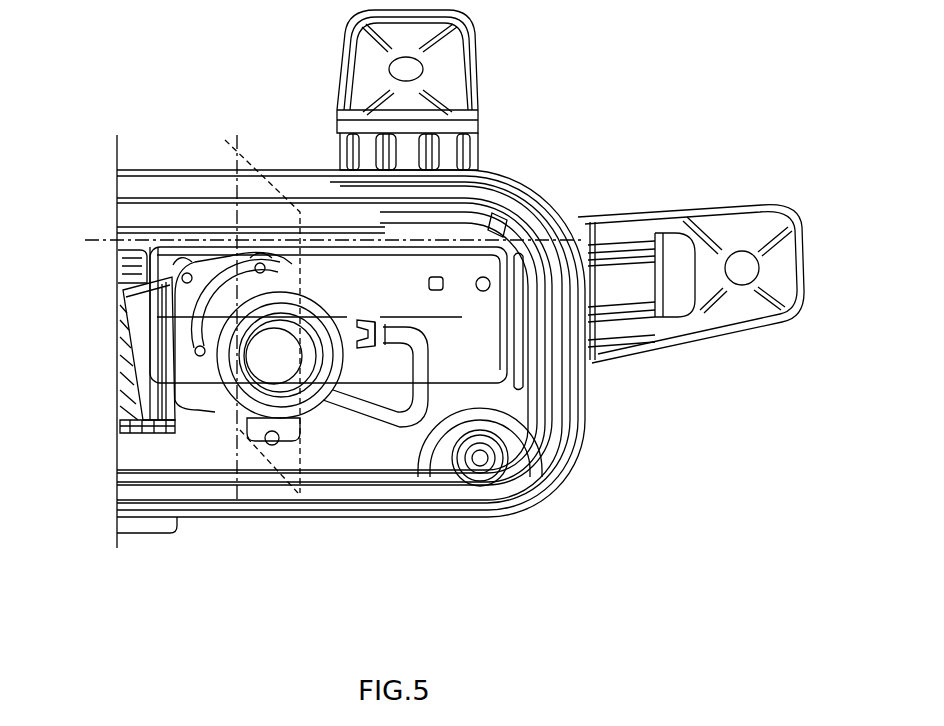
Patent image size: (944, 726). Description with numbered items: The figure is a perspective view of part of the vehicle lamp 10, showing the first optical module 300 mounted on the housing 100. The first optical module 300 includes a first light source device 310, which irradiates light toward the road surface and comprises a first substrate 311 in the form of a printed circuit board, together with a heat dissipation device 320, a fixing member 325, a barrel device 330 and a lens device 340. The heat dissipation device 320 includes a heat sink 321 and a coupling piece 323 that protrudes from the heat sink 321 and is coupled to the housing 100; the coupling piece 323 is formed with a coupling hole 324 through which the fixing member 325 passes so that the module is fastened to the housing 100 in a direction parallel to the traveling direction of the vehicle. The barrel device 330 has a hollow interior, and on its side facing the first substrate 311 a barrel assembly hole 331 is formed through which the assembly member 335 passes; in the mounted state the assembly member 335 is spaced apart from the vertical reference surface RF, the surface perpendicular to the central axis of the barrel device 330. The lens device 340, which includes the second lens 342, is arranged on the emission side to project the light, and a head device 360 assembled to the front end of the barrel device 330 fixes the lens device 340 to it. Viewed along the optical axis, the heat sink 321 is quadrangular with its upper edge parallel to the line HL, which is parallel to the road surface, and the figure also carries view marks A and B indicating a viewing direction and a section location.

The vehicle lamp 10 is at (166, 93).
The housing 100 is at (158, 178).
The first optical module 300 is at (72, 510).
The first light source device 310 is at (72, 425).
The first substrate 311 is at (182, 365).
The heat dissipation device 320 is at (540, 142).
The heat sink 321 is at (373, 273).
The coupling piece 323 is at (465, 266).
The coupling hole 324 is at (596, 336).
The fixing member 325 is at (490, 286).
The barrel device 330 is at (197, 325).
The barrel assembly hole 331 is at (80, 282).
The assembly member 335 is at (133, 313).
The lens device 340 is at (398, 560).
The second lens 342 is at (285, 368).
The head device 360 is at (240, 380).
The line parallel to the road surface HL is at (608, 240).
The vertical reference surface RF is at (300, 213).
The view direction A is at (443, 316).
The section line B is at (245, 151).